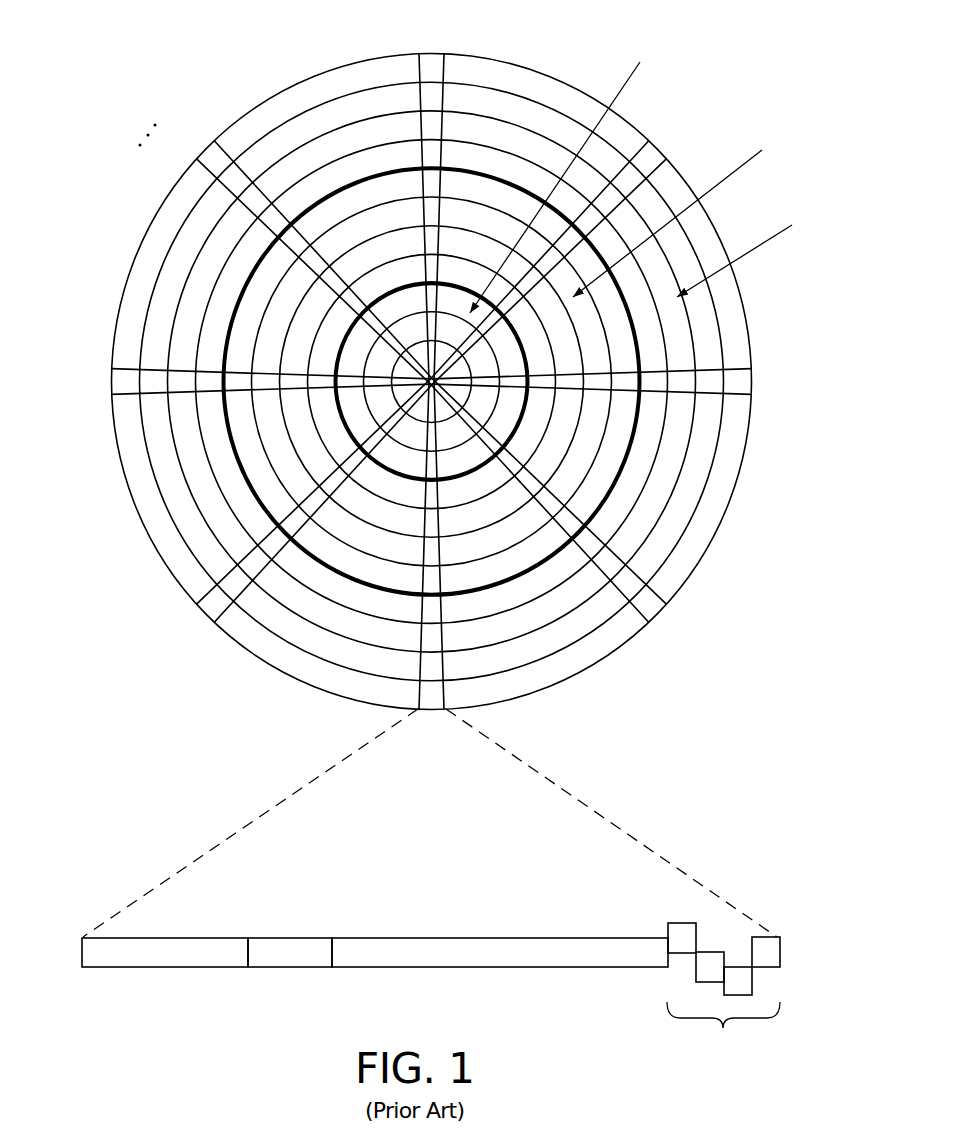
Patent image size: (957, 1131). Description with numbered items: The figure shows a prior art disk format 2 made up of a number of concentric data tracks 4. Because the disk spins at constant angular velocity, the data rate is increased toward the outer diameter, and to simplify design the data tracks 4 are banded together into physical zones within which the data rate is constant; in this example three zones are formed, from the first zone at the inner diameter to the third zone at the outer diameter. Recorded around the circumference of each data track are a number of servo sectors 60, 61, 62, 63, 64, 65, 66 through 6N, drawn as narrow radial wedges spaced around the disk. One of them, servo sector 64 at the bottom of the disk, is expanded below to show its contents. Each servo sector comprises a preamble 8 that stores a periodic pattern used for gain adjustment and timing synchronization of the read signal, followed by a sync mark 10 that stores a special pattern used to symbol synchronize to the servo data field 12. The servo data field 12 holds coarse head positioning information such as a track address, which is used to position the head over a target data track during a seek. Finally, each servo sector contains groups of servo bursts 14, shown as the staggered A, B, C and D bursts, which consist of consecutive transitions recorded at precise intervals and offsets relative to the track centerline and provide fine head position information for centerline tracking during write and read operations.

The disk format 2 is at (197, 60).
The data tracks 4 is at (540, 118).
The servo sector 60 is at (433, 62).
The servo sector 61 is at (650, 157).
The servo sector 62 is at (745, 384).
The servo sector 63 is at (650, 607).
The servo sector 64 is at (288, 788).
The servo sector 65 is at (210, 610).
The servo sector 66 is at (117, 382).
The servo sector 6N is at (212, 155).
The preamble 8 is at (147, 963).
The sync mark 10 is at (288, 963).
The servo data field 12 is at (488, 963).
The servo bursts 14 is at (657, 905).